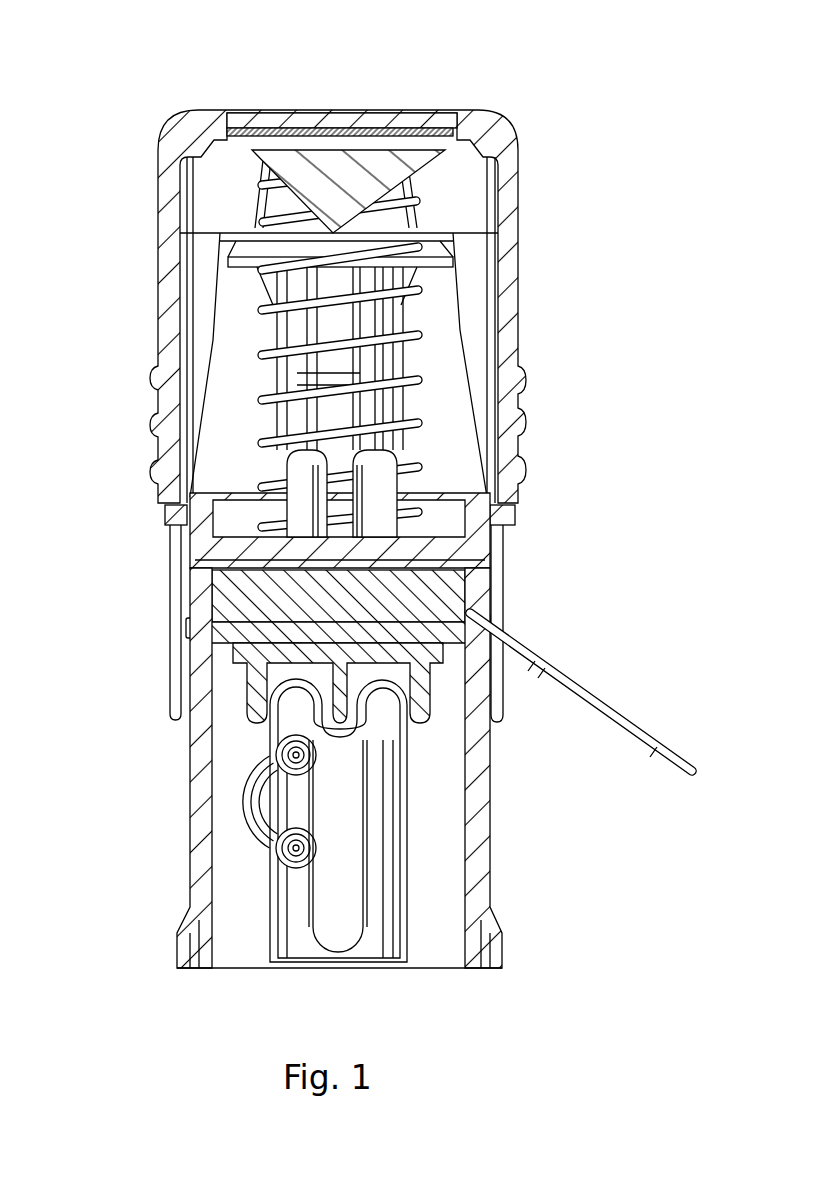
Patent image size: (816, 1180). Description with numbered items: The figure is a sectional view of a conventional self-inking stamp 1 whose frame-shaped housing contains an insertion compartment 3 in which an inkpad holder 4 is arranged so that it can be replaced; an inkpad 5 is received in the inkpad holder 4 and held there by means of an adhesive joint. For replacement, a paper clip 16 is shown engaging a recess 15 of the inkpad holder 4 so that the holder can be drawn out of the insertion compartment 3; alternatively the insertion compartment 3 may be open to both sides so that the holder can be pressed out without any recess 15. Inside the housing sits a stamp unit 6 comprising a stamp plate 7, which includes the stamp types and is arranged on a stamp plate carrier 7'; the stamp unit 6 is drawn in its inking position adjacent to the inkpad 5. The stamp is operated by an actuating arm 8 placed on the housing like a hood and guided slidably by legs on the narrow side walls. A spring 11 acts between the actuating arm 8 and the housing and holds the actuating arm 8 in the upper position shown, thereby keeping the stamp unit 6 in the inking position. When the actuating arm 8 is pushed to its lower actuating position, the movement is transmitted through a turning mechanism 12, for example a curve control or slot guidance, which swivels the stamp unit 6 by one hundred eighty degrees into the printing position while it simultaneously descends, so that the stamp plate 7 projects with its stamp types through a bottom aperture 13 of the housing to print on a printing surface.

The self-inking stamp 1 is at (148, 138).
The insertion compartment 3 is at (488, 578).
The inkpad holder 4 is at (200, 595).
The inkpad 5 is at (425, 587).
The stamp unit 6 is at (228, 737).
The stamp plate 7 is at (400, 594).
The stamp plate carrier 7' is at (418, 704).
The actuating arm 8 is at (507, 325).
The spring 11 is at (427, 288).
The turning mechanism 12 is at (423, 822).
The bottom aperture 13 is at (245, 922).
The recess 15 is at (192, 622).
The paper clip 16 is at (660, 743).